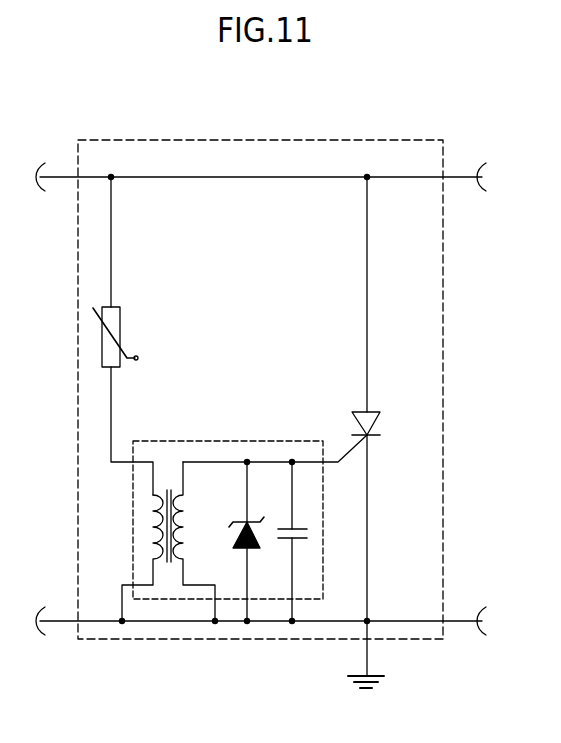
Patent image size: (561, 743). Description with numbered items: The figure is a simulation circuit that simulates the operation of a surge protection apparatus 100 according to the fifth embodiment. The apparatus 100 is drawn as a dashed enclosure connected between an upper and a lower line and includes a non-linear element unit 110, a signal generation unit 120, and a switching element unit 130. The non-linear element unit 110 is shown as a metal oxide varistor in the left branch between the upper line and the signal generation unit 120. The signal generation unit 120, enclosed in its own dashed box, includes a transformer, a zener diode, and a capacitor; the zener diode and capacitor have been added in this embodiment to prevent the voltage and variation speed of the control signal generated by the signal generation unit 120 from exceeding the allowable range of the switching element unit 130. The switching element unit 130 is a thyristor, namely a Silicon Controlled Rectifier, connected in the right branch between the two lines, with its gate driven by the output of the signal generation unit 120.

The surge protection apparatus 100 is at (237, 139).
The non-linear element unit 110 is at (113, 306).
The signal generation unit 120 is at (214, 440).
The switching element unit 130 is at (358, 410).